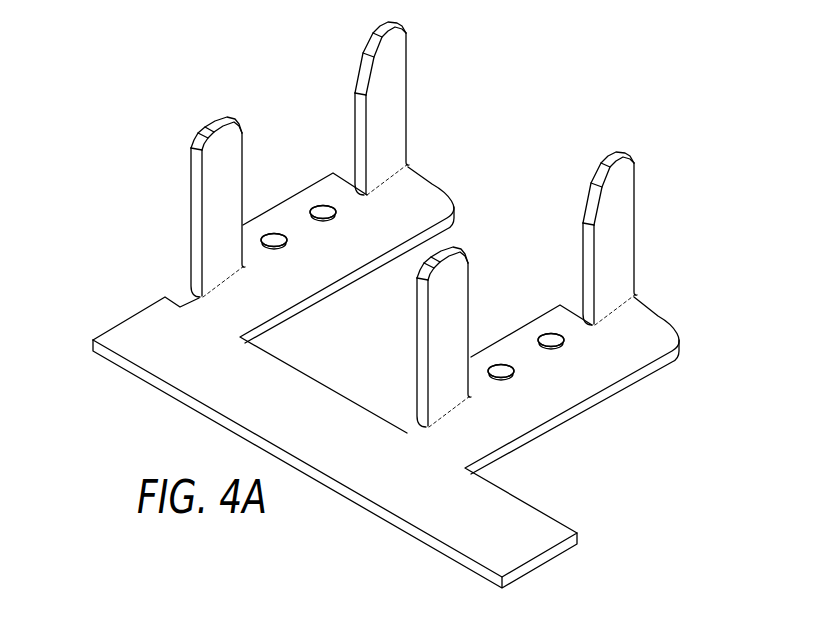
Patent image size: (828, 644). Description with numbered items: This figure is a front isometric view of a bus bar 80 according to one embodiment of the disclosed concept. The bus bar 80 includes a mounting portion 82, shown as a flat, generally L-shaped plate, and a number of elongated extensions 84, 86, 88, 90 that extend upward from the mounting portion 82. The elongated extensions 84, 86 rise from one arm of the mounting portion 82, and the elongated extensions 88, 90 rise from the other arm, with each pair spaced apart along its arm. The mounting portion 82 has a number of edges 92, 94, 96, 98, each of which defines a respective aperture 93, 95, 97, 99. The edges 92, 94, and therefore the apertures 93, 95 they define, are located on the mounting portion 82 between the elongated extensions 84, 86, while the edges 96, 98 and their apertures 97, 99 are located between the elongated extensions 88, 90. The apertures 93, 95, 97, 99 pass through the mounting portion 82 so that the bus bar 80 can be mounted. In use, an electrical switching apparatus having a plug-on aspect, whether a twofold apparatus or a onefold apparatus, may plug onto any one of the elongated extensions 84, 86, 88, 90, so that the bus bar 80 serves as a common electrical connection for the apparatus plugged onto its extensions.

The bus bar 80 is at (110, 144).
The mounting portion 82 is at (570, 393).
The elongated extension 84 is at (212, 183).
The elongated extension 86 is at (392, 80).
The elongated extension 88 is at (437, 312).
The elongated extension 90 is at (622, 183).
The edge 92 is at (278, 248).
The aperture 93 is at (287, 238).
The edge 94 is at (337, 213).
The aperture 95 is at (321, 207).
The edge 96 is at (503, 380).
The aperture 97 is at (501, 364).
The edge 98 is at (565, 340).
The aperture 99 is at (552, 333).